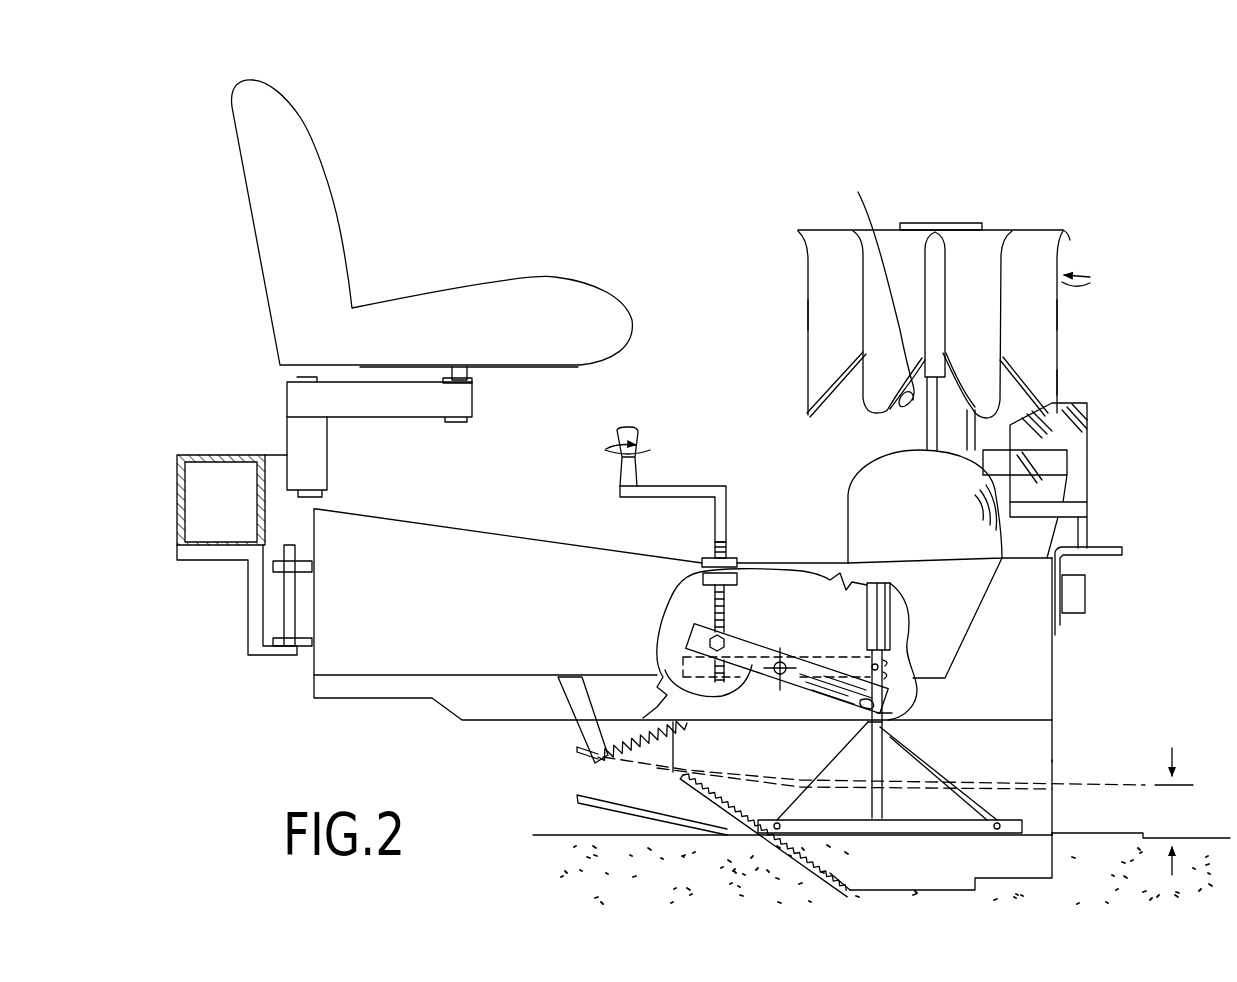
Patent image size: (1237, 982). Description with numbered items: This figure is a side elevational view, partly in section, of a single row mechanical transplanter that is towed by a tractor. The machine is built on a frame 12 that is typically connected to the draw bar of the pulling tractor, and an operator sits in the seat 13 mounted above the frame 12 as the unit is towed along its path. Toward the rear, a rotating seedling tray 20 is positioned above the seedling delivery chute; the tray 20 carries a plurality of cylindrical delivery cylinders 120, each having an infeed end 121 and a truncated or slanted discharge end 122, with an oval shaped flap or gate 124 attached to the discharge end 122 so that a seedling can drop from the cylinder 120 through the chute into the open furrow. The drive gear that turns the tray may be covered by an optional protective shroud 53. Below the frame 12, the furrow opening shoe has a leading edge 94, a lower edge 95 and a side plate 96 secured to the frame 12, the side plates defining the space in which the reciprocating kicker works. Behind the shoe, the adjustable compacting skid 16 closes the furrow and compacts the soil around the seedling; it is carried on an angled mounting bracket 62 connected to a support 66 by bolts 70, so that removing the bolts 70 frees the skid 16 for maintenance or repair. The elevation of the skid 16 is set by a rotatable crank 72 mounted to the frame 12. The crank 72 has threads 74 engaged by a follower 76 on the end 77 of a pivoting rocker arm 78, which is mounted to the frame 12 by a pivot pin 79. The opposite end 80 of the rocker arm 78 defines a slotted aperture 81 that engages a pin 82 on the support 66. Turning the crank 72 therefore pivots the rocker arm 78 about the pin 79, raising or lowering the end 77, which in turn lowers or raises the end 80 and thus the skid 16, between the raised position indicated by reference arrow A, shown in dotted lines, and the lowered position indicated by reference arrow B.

The frame 12 is at (308, 698).
The seat 13 is at (345, 252).
The compacting skid 16 is at (1083, 837).
The rotating seedling tray 20 is at (996, 220).
The protective shroud 53 is at (858, 487).
The angled mounting bracket 62 is at (837, 823).
The support 66 is at (892, 737).
The bolt 70 is at (777, 822).
The rotatable crank 72 is at (682, 486).
The threads 74 is at (733, 595).
The follower 76 is at (723, 632).
The end of rocker arm 77 is at (690, 625).
The rocker arm 78 is at (663, 677).
The pivot pin 79 is at (783, 676).
The end of rocker arm 80 is at (920, 683).
The slotted aperture 81 is at (920, 713).
The pin 82 is at (870, 716).
The leading edge 94 is at (687, 787).
The lower edge 95 is at (868, 900).
The side plate 96 is at (1032, 760).
The delivery cylinder 120 is at (808, 313).
The infeed end 121 is at (1063, 232).
The discharge end 122 is at (1057, 380).
The gate 124 is at (852, 437).
The reference arrow A is at (1173, 748).
The reference arrow B is at (1177, 862).